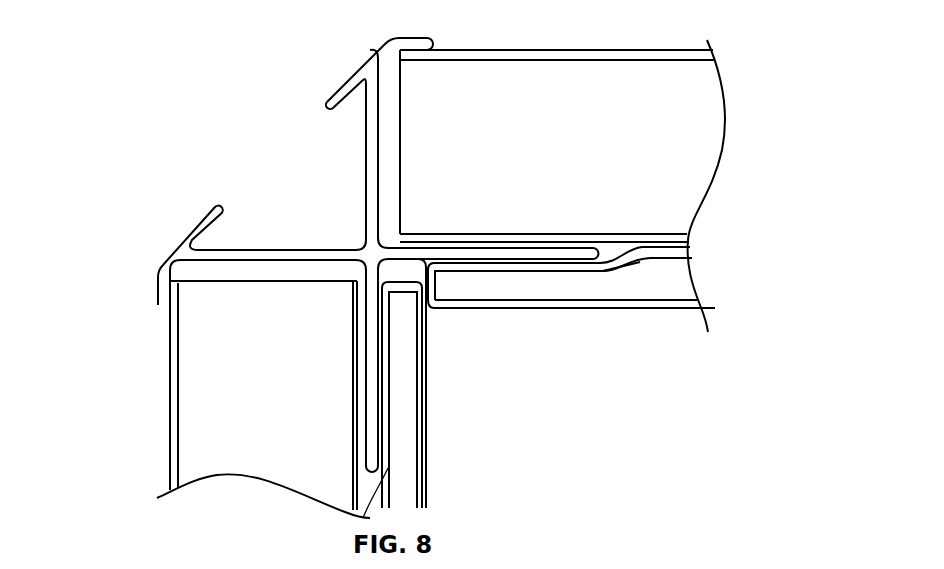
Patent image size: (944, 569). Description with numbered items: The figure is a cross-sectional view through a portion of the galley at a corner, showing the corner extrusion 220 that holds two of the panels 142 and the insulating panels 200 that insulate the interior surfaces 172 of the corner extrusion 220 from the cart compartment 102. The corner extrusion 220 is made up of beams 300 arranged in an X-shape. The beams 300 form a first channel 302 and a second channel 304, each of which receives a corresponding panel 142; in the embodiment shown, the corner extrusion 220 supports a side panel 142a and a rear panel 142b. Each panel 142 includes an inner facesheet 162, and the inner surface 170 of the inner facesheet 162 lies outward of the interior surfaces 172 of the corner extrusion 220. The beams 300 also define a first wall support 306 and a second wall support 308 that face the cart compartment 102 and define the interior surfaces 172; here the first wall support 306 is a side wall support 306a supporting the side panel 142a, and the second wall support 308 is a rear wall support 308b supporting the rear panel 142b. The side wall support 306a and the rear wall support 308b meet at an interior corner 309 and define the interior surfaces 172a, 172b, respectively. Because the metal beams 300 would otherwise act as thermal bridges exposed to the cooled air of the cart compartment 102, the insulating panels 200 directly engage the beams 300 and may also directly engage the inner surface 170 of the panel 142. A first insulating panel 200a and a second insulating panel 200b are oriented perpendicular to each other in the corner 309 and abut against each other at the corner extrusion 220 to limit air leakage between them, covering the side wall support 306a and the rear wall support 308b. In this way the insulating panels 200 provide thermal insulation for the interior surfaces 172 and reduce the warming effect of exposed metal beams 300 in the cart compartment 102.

The cart compartment 102 is at (570, 419).
The panel 142 is at (675, 138).
The side panel 142a is at (238, 442).
The rear panel 142b is at (623, 95).
The inner facesheet 162 is at (683, 240).
The inner surface 170 is at (647, 248).
The interior surfaces 172 is at (547, 260).
The interior surface 172a is at (403, 400).
The interior surface 172b is at (522, 258).
The insulating panels 200 is at (676, 277).
The first insulating panel 200a is at (410, 484).
The second insulating panel 200b is at (620, 288).
The corner extrusion 220 is at (355, 152).
The beams 300 is at (366, 194).
The first channel 302 is at (200, 271).
The second channel 304 is at (390, 90).
The first wall support 306 is at (372, 392).
The side wall support 306a is at (370, 483).
The second wall support 308 is at (497, 251).
The rear wall support 308b is at (600, 272).
The interior corner 309 is at (387, 263).